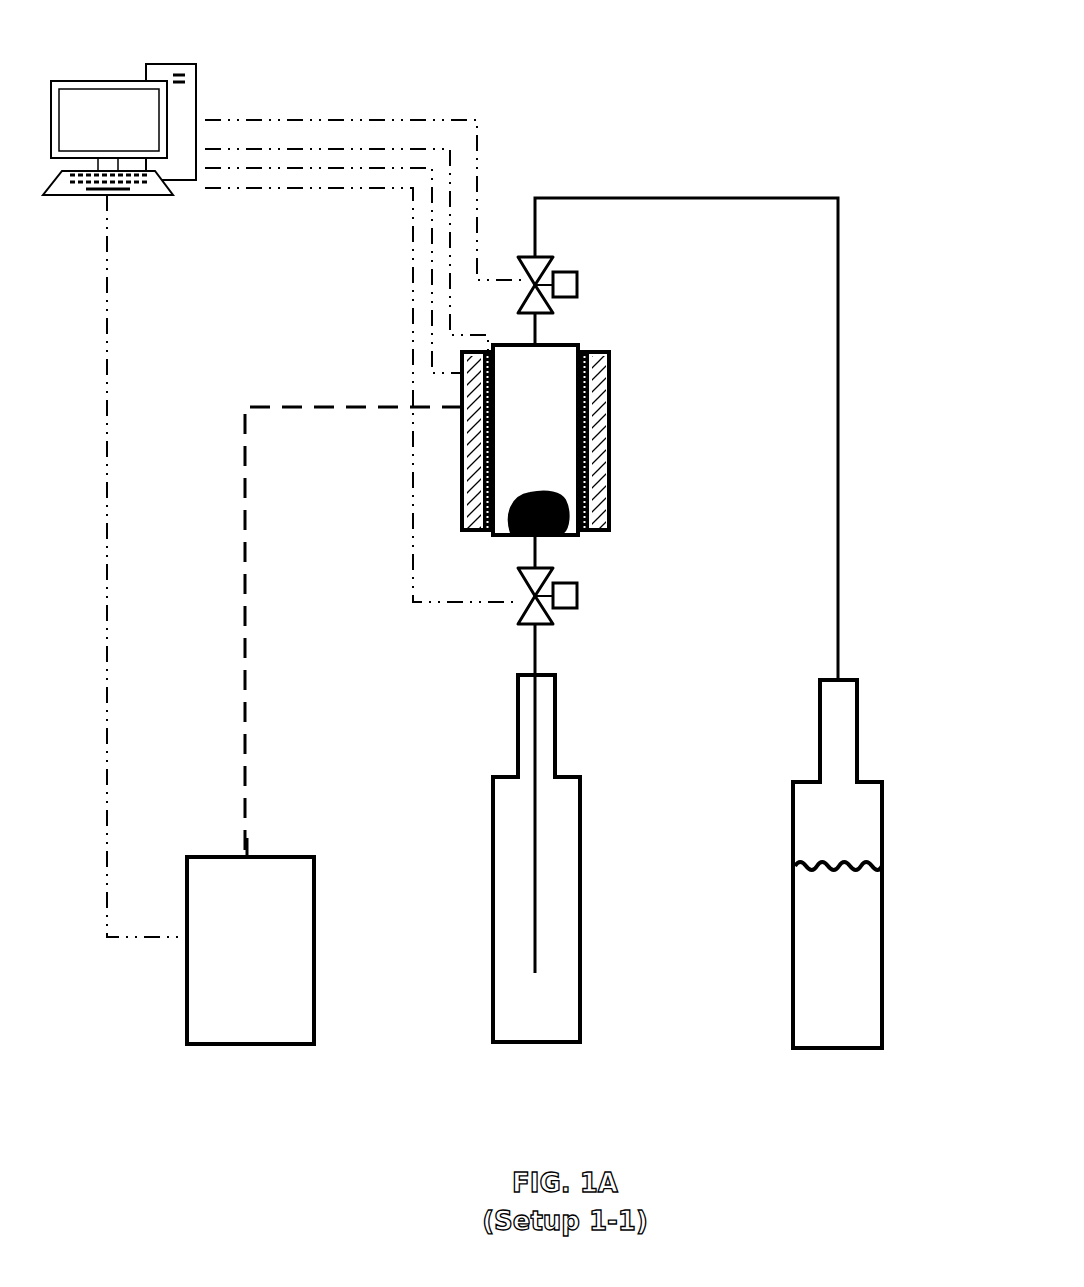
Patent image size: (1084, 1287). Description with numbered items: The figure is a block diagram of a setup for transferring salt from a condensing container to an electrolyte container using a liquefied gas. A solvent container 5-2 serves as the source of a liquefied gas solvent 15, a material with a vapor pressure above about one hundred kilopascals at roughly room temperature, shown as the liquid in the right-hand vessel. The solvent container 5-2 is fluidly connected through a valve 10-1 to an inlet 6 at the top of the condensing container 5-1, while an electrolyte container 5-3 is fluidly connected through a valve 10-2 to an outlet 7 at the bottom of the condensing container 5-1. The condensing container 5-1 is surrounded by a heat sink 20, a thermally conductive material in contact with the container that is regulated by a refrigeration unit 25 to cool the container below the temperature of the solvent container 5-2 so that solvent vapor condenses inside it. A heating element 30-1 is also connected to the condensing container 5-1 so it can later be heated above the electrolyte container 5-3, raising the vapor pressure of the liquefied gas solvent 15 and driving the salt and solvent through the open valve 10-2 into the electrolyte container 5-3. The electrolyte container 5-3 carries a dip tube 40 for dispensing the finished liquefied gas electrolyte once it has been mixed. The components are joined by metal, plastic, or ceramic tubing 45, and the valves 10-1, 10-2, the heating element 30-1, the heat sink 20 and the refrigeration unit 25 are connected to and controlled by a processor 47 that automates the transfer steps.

The processor 47 is at (197, 72).
The tubing 45 is at (838, 438).
The valve 10-1 is at (575, 283).
The valve 10-2 is at (577, 605).
The heating element 30-1 is at (597, 412).
The heat sink 20 is at (597, 475).
The condensing container 5-1 is at (580, 343).
The inlet 6 is at (538, 343).
The outlet 7 is at (543, 537).
The dip tube 40 is at (537, 837).
The electrolyte container 5-3 is at (580, 967).
The solvent container 5-2 is at (882, 1020).
The liquefied gas solvent 15 is at (853, 940).
The refrigeration unit 25 is at (312, 928).